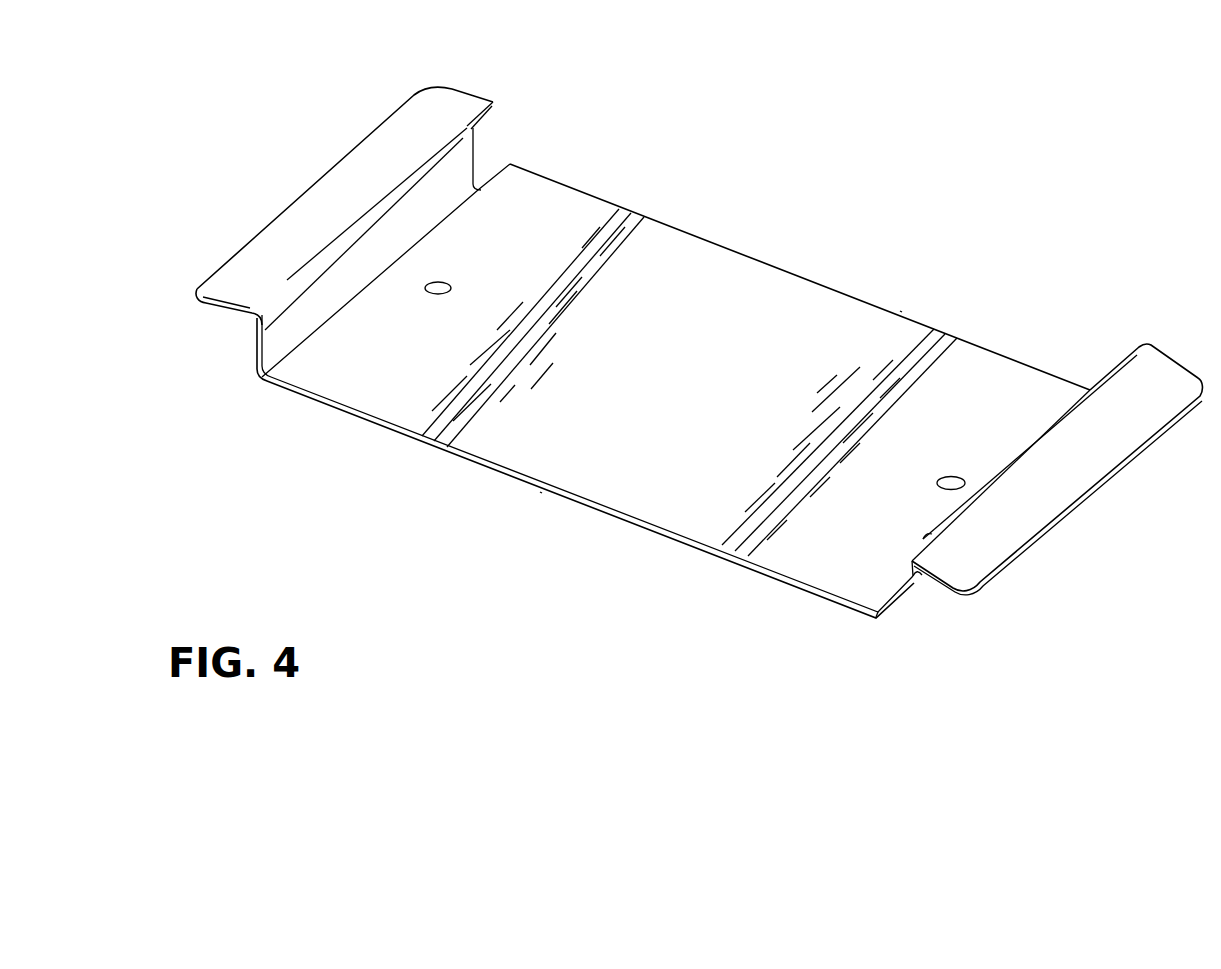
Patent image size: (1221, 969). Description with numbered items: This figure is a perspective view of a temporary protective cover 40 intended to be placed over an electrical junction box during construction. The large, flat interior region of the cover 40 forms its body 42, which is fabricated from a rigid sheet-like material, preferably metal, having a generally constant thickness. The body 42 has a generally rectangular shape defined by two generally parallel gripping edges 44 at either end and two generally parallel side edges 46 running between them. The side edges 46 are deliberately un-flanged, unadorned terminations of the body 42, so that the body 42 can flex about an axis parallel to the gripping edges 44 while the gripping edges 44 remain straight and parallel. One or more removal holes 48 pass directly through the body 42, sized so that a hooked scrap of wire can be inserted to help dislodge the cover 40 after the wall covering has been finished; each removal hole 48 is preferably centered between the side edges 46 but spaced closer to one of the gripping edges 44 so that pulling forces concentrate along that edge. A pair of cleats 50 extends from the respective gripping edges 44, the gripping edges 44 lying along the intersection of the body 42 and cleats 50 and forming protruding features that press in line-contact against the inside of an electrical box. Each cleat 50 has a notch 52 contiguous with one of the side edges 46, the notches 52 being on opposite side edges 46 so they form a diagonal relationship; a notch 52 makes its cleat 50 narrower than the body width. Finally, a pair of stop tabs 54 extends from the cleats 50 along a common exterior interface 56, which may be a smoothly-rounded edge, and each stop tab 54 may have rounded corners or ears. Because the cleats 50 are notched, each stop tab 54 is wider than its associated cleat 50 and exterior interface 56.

The temporary protective cover 40 is at (804, 204).
The body 42 is at (734, 374).
The gripping edges 44 is at (257, 372).
The side edges 46 is at (540, 492).
The removal hole 48 is at (437, 287).
The cleats 50 is at (305, 310).
The notch 52 is at (478, 162).
The stop tabs 54 is at (275, 240).
The exterior interface 56 is at (422, 166).